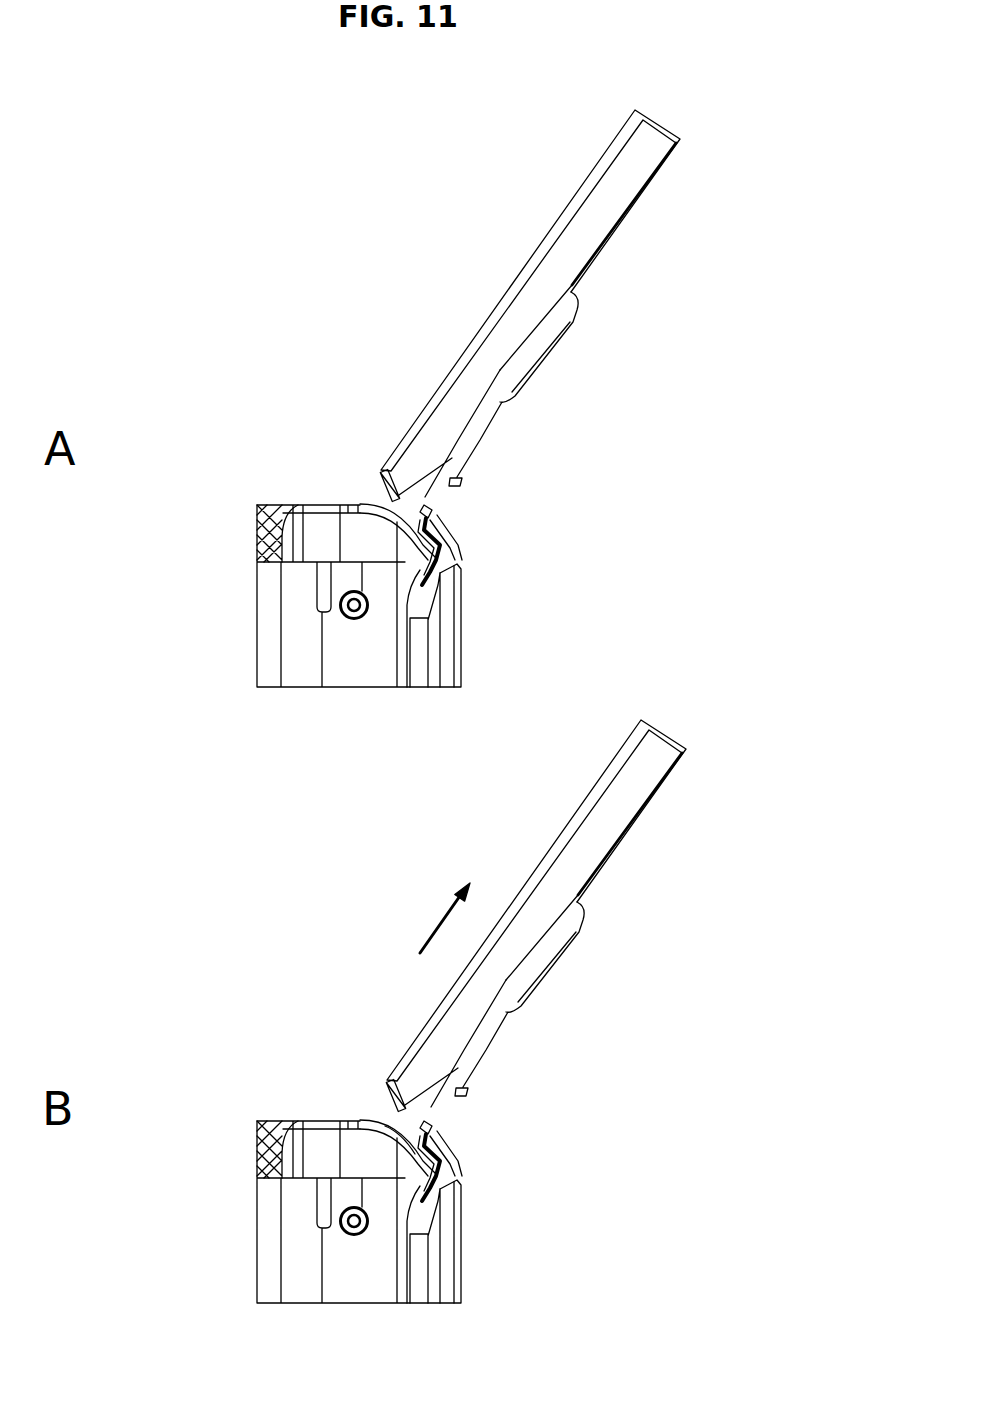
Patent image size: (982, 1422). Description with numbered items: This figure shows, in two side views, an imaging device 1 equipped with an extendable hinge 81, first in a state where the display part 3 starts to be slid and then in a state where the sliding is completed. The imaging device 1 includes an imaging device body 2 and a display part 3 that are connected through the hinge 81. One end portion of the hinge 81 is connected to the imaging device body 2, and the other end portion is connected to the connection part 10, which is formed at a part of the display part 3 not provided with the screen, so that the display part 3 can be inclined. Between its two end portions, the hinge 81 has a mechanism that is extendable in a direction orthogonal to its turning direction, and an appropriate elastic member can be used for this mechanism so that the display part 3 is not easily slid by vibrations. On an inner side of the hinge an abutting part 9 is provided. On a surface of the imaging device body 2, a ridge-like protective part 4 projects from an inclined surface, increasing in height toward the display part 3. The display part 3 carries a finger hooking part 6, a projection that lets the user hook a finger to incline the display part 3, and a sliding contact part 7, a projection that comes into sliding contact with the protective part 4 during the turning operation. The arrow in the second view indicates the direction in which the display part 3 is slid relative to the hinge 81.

The imaging device 1 is at (656, 456).
The imaging device body 2 is at (445, 628).
The display part 3 is at (567, 222).
The protective part 4 is at (352, 498).
The finger hooking part 6 is at (378, 487).
The sliding contact part 7 is at (392, 1108).
The abutting part 9 is at (440, 543).
The connection part 10 is at (557, 323).
The hinge 81 is at (443, 485).